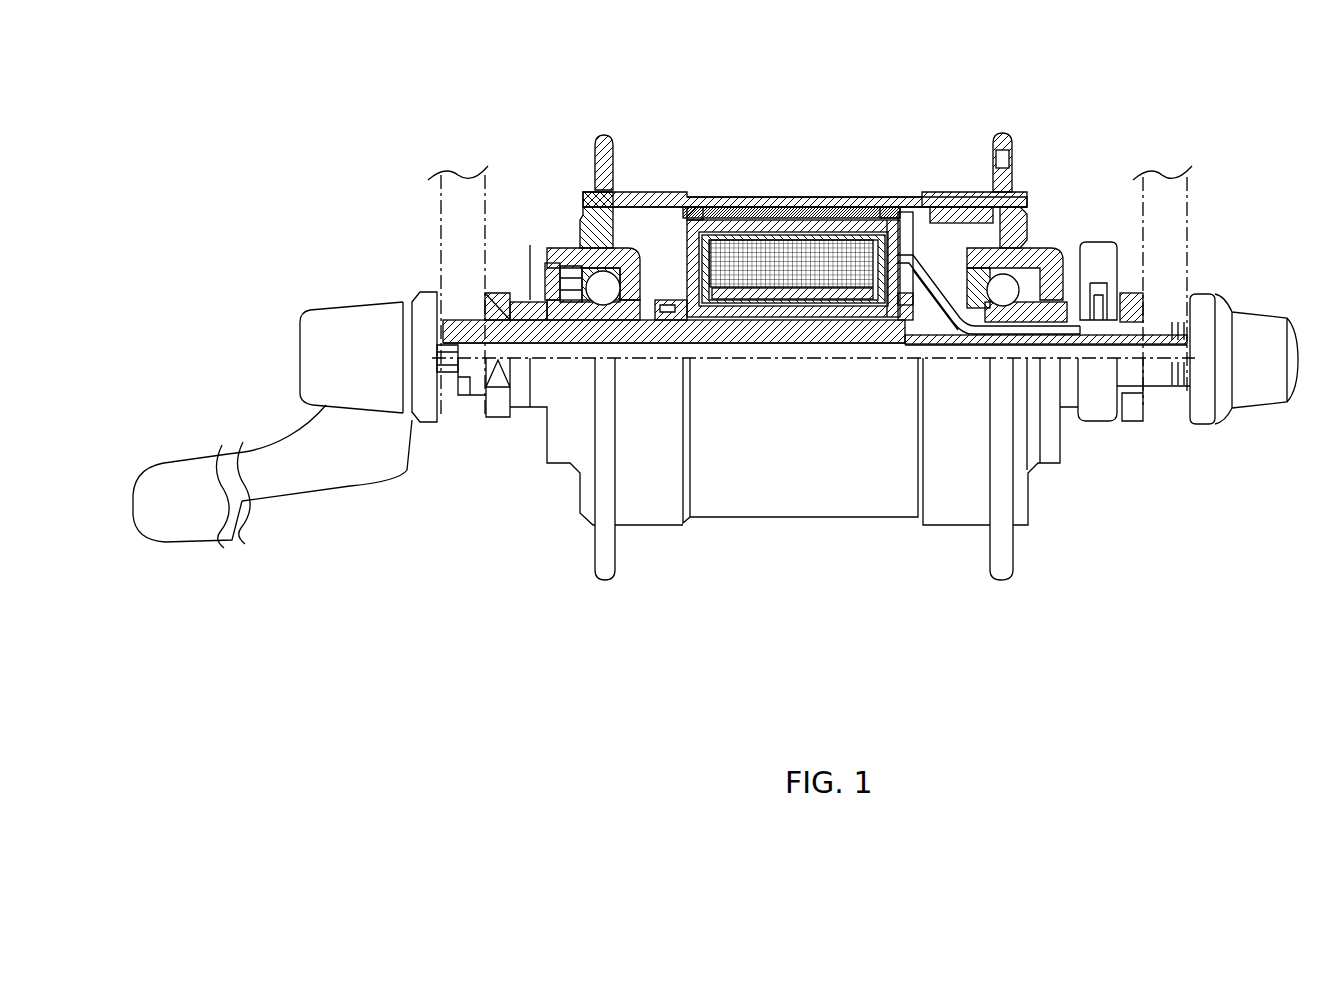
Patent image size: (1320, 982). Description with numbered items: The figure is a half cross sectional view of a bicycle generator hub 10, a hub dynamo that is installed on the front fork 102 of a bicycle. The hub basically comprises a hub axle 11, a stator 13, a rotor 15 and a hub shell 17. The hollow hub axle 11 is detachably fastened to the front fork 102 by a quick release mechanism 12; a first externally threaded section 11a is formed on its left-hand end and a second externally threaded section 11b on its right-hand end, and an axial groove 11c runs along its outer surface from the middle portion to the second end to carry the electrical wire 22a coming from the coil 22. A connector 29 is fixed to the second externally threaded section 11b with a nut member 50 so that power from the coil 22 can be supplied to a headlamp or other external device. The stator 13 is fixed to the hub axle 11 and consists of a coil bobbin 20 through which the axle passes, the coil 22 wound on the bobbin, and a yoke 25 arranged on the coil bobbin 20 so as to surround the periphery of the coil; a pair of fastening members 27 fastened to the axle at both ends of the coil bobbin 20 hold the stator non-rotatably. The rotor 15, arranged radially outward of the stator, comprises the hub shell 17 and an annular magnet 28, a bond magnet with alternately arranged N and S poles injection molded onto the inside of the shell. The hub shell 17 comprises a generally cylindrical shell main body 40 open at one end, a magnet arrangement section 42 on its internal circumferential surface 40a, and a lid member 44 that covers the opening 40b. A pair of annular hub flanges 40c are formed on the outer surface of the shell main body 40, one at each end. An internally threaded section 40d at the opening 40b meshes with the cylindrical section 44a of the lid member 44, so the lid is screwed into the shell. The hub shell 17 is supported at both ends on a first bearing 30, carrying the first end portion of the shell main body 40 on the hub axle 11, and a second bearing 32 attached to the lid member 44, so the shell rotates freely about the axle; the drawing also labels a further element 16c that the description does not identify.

The bicycle generator hub 10 is at (815, 147).
The hub axle 11 is at (598, 288).
The first externally threaded section 11a is at (486, 298).
The second externally threaded section 11b is at (1140, 293).
The axial groove 11c is at (804, 324).
The quick release mechanism 12 is at (393, 318).
The stator 13 is at (678, 248).
The rotor 15 is at (858, 192).
The terminal portion 16c is at (903, 316).
The hub shell 17 is at (897, 212).
The coil bobbin 20 is at (732, 314).
The coil 22 is at (783, 226).
The electrical wire 22a is at (993, 212).
The yoke 25 is at (707, 198).
The fastening members 27 is at (1036, 230).
The annular magnet 28 is at (806, 228).
The connector 29 is at (1093, 398).
The first bearing 30 is at (549, 278).
The second bearing 32 is at (1012, 290).
The shell main body 40 is at (762, 188).
The internal circumferential surface 40a is at (625, 206).
The opening 40b is at (968, 210).
The annular hub flanges 40c is at (608, 572).
The internally threaded section 40d is at (928, 203).
The magnet arrangement section 42 is at (727, 238).
The lid member 44 is at (935, 262).
The cylindrical section 44a is at (958, 208).
The nut member 50 is at (1131, 392).
The front fork 102 is at (441, 212).